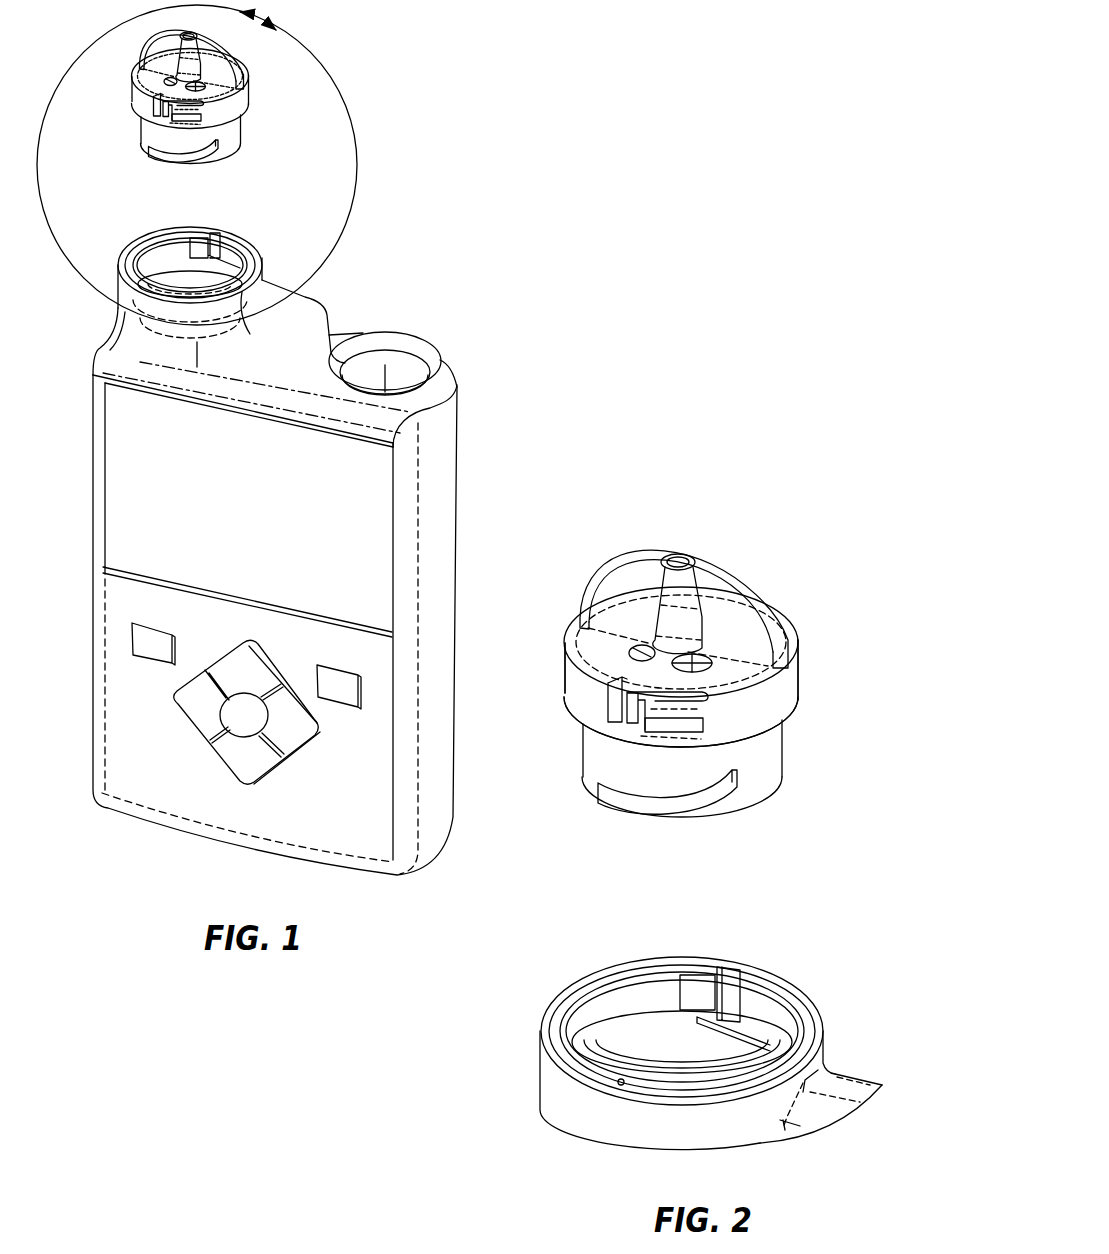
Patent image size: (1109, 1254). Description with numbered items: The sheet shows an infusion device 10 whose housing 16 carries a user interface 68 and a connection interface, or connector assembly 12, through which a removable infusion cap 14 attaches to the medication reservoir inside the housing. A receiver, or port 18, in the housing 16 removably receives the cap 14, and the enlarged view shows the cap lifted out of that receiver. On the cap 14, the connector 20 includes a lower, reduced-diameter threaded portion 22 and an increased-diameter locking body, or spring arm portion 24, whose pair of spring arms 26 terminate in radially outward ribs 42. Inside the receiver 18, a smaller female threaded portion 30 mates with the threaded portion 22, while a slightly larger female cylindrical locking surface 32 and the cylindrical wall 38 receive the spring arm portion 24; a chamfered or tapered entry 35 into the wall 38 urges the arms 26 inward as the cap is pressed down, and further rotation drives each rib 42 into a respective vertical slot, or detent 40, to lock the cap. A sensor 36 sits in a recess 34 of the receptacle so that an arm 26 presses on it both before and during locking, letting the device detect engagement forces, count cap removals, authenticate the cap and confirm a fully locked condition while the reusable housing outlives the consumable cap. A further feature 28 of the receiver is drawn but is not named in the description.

In FIG. 1, the infusion device 10 is at (503, 160).
In FIG. 1, the connection interface 12 is at (130, 35).
In FIG. 2, the connection interface 12 is at (836, 590).
In FIG. 1, the cap 14 is at (283, 98).
In FIG. 2, the cap 14 is at (787, 558).
In FIG. 1, the housing 16 is at (135, 852).
In FIG. 2, the housing 16 is at (857, 1065).
In FIG. 1, the port 18 is at (282, 257).
In FIG. 2, the port 18 is at (802, 987).
In FIG. 2, the connector 20 is at (715, 703).
In FIG. 2, the threaded portion 22 is at (640, 776).
In FIG. 2, the spring arm portion 24 is at (643, 648).
In FIG. 2, the spring arms 26 is at (626, 736).
In FIG. 2, the inner wall 28 is at (570, 1032).
In FIG. 2, the female threaded portion 30 is at (608, 1055).
In FIG. 2, the female cylindrical locking surface 32 is at (613, 1003).
In FIG. 2, the recess 34 is at (697, 985).
In FIG. 2, the tapered entry 35 is at (615, 980).
In FIG. 2, the sensor 36 is at (707, 1000).
In FIG. 2, the cylindrical wall 38 is at (635, 992).
In FIG. 2, the vertical slots 40 is at (733, 965).
In FIG. 2, the ribs 42 is at (587, 714).
In FIG. 1, the user interface 68 is at (155, 700).